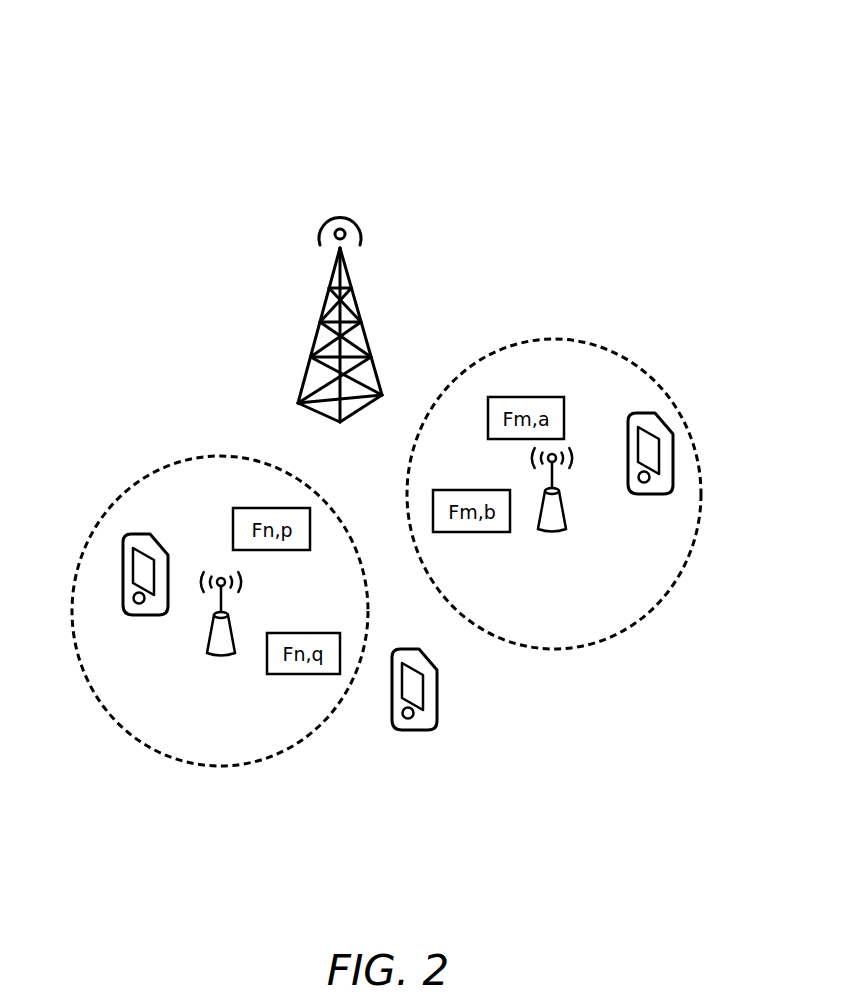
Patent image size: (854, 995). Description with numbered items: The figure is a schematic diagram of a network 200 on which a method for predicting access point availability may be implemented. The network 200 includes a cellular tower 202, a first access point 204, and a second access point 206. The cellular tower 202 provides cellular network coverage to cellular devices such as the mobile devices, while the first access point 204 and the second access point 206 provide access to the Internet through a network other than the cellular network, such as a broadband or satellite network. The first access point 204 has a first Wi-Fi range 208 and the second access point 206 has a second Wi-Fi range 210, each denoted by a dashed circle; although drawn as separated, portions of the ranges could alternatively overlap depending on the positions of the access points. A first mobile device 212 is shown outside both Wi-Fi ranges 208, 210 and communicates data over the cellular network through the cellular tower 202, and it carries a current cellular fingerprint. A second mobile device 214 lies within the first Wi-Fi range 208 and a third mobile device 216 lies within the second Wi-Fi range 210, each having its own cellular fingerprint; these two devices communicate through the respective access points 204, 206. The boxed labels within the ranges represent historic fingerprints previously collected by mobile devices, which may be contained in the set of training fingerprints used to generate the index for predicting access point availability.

The network 200 is at (352, 46).
The cellular tower 202 is at (322, 314).
The first access point (APn) 204 is at (212, 660).
The second access point (APm) 206 is at (565, 532).
The first Wi-Fi range 208 is at (150, 473).
The second Wi-Fi range 210 is at (602, 346).
The first mobile device M 212 is at (437, 725).
The second mobile device M' 214 is at (125, 561).
The third mobile device M" 216 is at (673, 466).